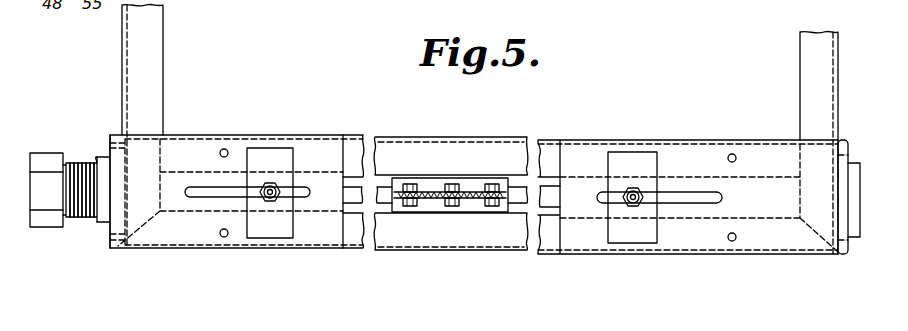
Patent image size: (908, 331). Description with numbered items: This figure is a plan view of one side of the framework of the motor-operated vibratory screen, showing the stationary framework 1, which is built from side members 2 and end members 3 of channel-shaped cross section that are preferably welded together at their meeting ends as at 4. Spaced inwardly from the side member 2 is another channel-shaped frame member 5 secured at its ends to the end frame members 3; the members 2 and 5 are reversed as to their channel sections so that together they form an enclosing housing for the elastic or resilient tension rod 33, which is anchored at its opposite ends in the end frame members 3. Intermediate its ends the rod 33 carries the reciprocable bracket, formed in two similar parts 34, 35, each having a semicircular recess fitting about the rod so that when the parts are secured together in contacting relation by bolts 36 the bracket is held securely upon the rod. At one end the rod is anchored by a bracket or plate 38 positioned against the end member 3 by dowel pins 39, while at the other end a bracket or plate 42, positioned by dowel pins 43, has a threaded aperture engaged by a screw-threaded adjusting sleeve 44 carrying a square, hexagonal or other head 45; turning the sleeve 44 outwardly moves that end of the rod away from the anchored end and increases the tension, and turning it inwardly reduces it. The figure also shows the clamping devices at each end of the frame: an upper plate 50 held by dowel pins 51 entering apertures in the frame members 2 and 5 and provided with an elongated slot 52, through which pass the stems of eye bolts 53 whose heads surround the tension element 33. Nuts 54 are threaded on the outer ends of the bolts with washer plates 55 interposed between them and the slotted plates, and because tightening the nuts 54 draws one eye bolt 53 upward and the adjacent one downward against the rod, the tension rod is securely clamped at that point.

The stationary framework 1 is at (505, 138).
The side member 2 is at (505, 232).
The end member 3 is at (145, 61).
The welded meeting end 4 is at (141, 250).
The frame member 5 is at (385, 160).
The tension rod 33 is at (385, 198).
The bracket part 34 is at (437, 207).
The bracket part 35 is at (421, 193).
The bolts 36 is at (492, 207).
The bracket or plate 38 is at (855, 184).
The dowel pins 39 is at (846, 156).
The bracket or plate 42 is at (113, 137).
The dowel pins 43 is at (109, 250).
The adjusting sleeve 44 is at (78, 170).
The head 45 is at (35, 165).
The plate 50 is at (238, 150).
The dowel pins 51 is at (226, 238).
The elongated slot 52 is at (203, 197).
The eye bolts 53 is at (263, 190).
The nuts 54 is at (278, 199).
The washer plates 55 is at (280, 168).